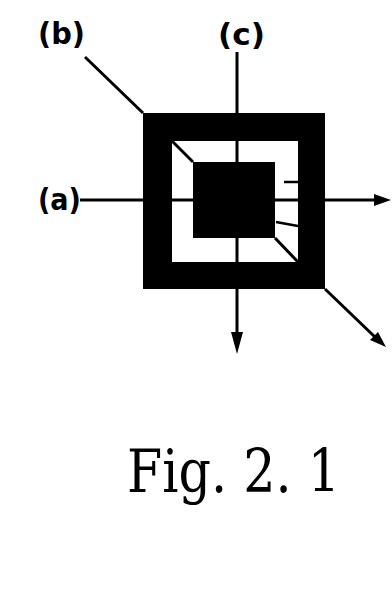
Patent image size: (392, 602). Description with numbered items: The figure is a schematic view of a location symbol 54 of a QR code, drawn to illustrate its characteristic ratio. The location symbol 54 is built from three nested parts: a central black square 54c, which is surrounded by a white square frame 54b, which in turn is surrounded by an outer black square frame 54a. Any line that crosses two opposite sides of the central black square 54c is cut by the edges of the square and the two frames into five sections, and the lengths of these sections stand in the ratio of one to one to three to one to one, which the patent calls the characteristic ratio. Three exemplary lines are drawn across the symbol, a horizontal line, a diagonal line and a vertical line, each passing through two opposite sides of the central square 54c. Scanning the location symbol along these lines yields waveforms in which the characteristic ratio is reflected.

The location symbol 54 is at (267, 178).
The black square frame 54a is at (322, 113).
The white square frame 54b is at (324, 172).
The black square 54c is at (325, 240).